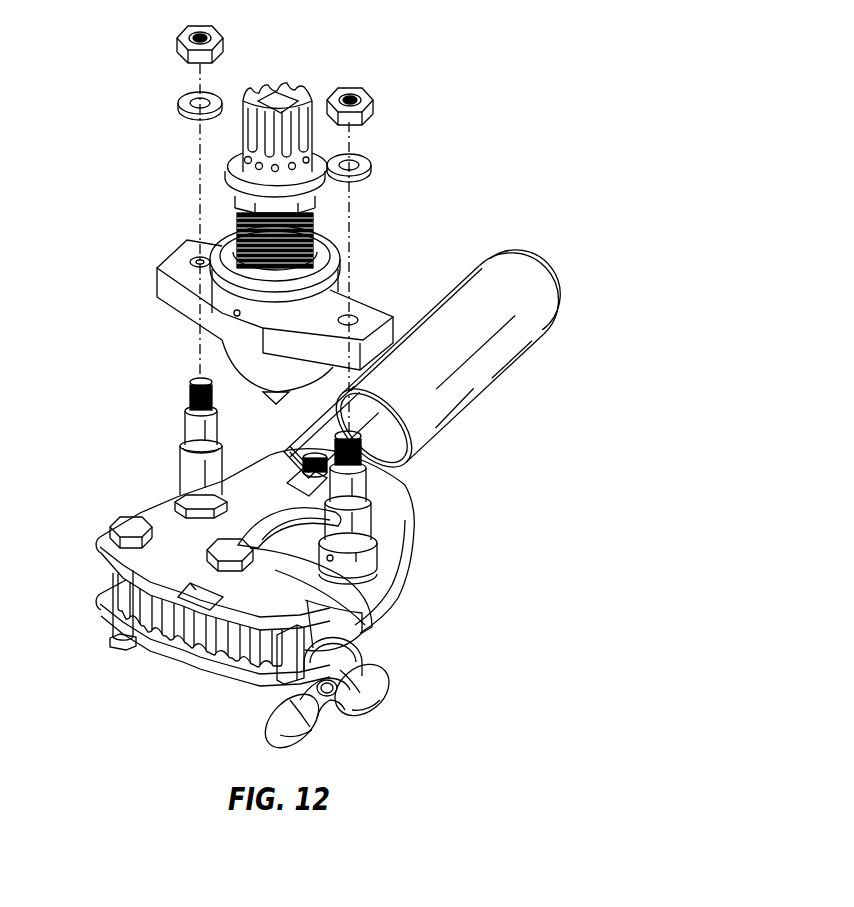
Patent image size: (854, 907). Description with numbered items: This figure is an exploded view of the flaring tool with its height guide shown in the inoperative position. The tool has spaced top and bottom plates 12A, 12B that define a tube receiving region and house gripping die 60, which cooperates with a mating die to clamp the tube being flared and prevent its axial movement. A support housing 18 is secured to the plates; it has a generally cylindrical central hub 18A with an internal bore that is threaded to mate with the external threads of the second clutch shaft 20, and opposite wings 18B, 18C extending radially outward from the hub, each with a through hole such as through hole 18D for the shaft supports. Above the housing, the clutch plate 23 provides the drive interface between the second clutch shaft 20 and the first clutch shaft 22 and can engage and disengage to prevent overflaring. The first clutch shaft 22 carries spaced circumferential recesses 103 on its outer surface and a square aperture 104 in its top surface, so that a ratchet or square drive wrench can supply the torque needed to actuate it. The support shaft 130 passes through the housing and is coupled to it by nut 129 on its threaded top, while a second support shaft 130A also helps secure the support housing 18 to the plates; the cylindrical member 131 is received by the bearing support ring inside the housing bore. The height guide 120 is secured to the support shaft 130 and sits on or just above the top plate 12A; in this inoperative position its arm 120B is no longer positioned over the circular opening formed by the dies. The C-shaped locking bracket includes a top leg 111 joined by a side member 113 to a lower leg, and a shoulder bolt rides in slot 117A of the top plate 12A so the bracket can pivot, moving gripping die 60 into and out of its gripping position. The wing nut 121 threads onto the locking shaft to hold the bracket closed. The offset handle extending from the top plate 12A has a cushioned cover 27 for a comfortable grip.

The first clutch shaft 22 is at (302, 70).
The square aperture 104 is at (275, 96).
The spaced circumferential recesses 103 is at (306, 104).
The nut 129 is at (384, 98).
The clutch plate 23 is at (234, 188).
The second clutch shaft 20 is at (332, 218).
The support housing 18 is at (357, 290).
The central hub 18A is at (290, 388).
The wing 18B is at (176, 258).
The wing 18C is at (372, 314).
The through hole 18D is at (193, 266).
The cushioned cover 27 is at (484, 346).
The top plate 12A is at (270, 458).
The bottom plate 12B is at (193, 664).
The second support shaft 130A is at (182, 466).
The cylindrical member 131 is at (362, 457).
The support shaft 130 is at (350, 526).
The height guide 120 is at (362, 553).
The arm 120B is at (263, 514).
The top leg 111 is at (292, 583).
The side member 113 is at (377, 620).
The slot 117A is at (190, 598).
The gripping die 60 is at (233, 653).
The wing nut 121 is at (382, 690).